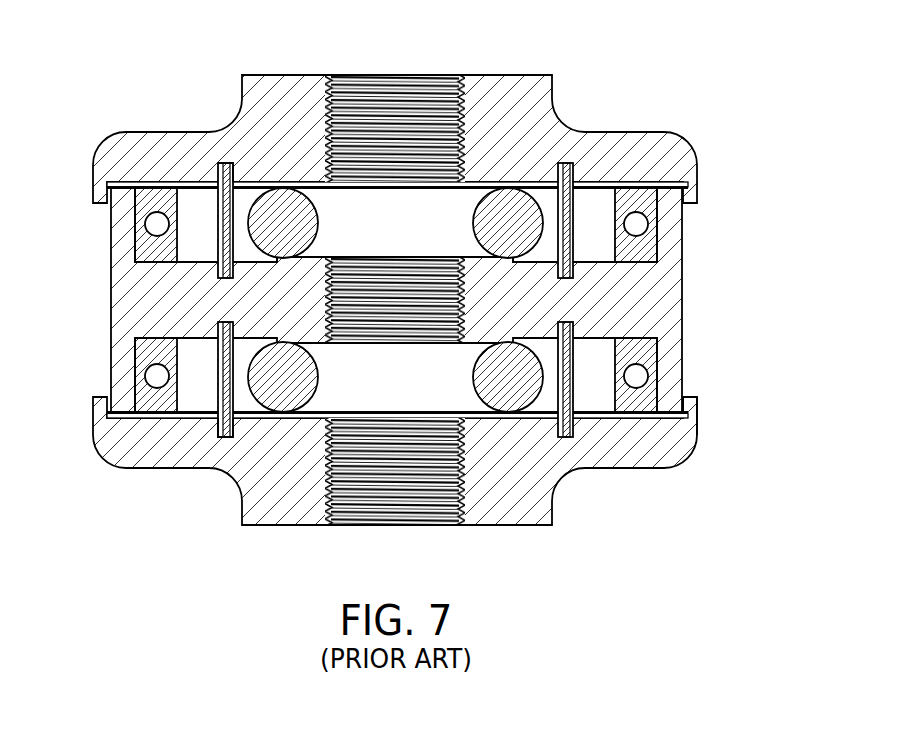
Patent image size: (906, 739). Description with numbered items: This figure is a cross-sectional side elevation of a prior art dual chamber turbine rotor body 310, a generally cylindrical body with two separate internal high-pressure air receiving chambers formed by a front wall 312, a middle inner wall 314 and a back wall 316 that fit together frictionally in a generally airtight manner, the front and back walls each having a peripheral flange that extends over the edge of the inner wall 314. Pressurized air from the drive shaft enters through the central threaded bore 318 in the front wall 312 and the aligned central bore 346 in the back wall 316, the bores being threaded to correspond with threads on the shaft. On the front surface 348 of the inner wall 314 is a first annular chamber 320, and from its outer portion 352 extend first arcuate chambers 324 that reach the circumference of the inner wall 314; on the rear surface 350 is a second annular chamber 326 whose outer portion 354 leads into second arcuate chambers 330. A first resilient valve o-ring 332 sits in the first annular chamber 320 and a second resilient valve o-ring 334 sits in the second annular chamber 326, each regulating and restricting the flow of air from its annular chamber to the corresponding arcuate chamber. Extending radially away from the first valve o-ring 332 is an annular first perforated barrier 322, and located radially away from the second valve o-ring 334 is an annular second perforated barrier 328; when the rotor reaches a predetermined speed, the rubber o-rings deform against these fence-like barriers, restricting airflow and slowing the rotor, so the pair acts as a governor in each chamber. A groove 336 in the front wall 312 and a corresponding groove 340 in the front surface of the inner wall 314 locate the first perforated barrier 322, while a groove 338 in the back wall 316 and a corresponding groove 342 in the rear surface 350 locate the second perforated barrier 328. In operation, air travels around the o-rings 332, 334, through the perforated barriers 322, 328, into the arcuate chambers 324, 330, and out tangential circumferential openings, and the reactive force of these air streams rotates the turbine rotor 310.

The turbine rotor body 310 is at (141, 70).
The front wall 312 is at (646, 132).
The middle inner wall 314 is at (110, 299).
The back wall 316 is at (627, 468).
The central threaded bore 318 is at (388, 92).
The first annular chamber 320 is at (321, 256).
The first perforated barrier 322 is at (222, 195).
The first arcuate chamber 324 is at (596, 258).
The second annular chamber 326 is at (505, 415).
The second perforated barrier 328 is at (565, 407).
The second arcuate chamber 330 is at (699, 424).
The first resilient valve o-ring 332 is at (287, 203).
The second resilient valve o-ring 334 is at (310, 377).
The groove in the front wall 336 is at (233, 171).
The groove in the back wall 338 is at (227, 423).
The groove in the front surface of the inner wall 340 is at (565, 279).
The groove in the rear surface of the inner wall 342 is at (228, 322).
The central bore of the back wall 346 is at (396, 510).
The front surface of the inner wall 348 is at (594, 178).
The rear surface of the inner wall 350 is at (162, 422).
The outer portion of the first annular chamber 352 is at (537, 252).
The outer portion of the second annular chamber 354 is at (248, 405).